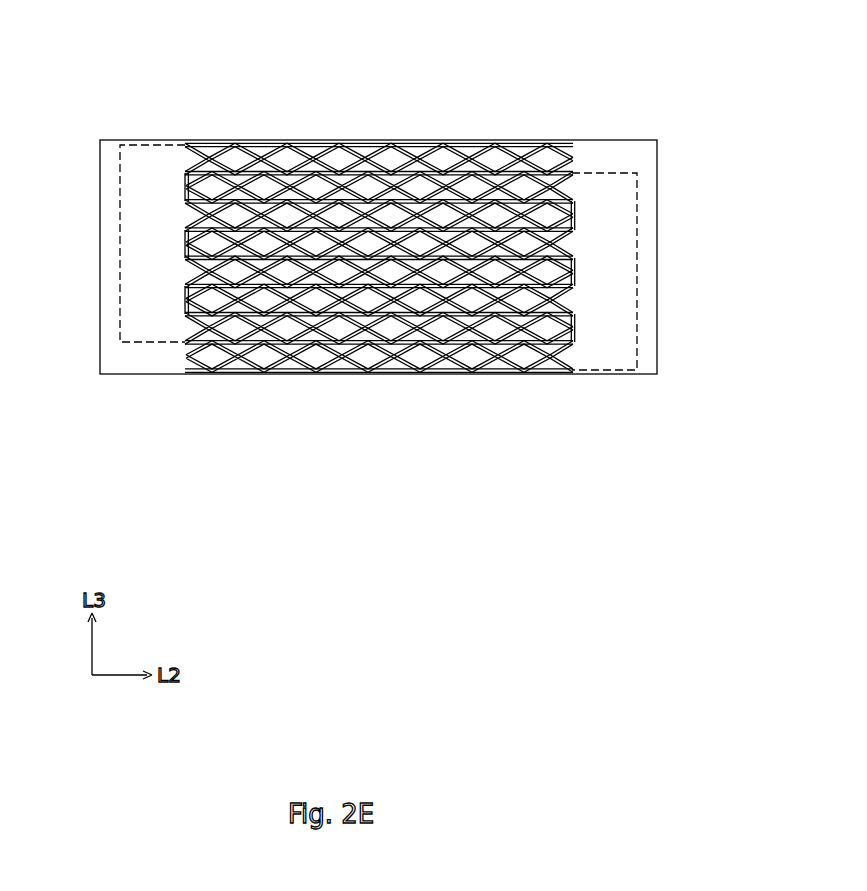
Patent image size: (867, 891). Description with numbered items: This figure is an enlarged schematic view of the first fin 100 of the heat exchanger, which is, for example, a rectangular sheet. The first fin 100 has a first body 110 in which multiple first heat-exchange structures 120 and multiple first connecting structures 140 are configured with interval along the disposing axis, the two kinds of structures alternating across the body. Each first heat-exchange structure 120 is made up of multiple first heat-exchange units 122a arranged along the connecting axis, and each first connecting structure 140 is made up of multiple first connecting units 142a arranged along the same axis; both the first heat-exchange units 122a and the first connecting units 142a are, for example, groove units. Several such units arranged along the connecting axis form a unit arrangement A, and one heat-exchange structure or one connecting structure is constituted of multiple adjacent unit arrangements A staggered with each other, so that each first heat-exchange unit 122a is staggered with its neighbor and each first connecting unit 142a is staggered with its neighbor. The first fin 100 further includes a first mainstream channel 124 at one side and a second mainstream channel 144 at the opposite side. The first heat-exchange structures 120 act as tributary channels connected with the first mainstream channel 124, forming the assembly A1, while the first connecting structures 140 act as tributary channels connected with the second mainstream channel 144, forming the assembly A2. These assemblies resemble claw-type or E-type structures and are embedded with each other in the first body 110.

The first fin 100 is at (545, 693).
The first body 110 is at (649, 376).
The first heat-exchange structure 120 is at (380, 227).
The first heat-exchange unit 122a is at (517, 185).
The first mainstream channel 124 is at (585, 185).
The first connecting structure 140 is at (267, 338).
The first connecting unit 142a is at (237, 334).
The second mainstream channel 144 is at (140, 163).
The unit arrangement A is at (318, 135).
The assembly of the first heat-exchange structures and the first mainstream channel A1 is at (610, 175).
The assembly of the first connecting structures and the second mainstream channel A2 is at (170, 145).